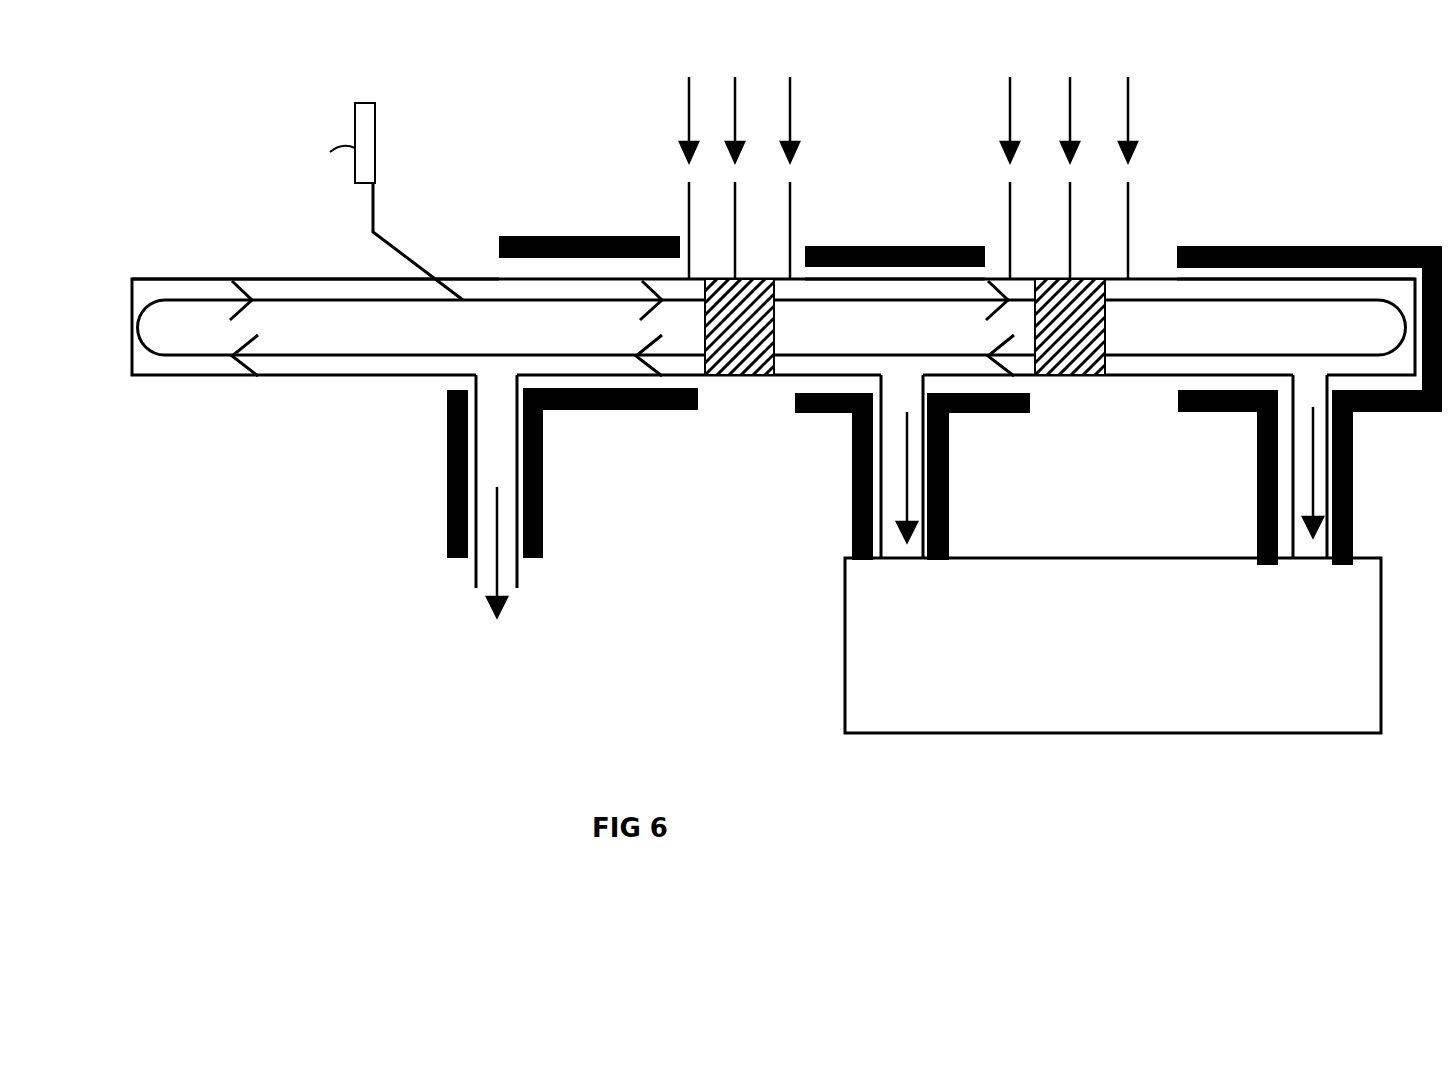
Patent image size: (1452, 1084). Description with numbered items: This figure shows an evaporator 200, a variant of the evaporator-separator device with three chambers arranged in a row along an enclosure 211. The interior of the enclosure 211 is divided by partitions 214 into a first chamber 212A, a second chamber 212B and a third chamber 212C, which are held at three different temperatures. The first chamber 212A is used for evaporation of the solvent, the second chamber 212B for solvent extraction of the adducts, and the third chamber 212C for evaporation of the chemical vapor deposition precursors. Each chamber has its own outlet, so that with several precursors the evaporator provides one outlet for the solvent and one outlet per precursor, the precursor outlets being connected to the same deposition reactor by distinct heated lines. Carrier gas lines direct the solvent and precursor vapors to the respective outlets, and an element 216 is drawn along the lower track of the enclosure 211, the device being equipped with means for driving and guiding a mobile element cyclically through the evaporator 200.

The evaporator 200 is at (264, 555).
The enclosure 211 is at (343, 280).
The first chamber 212A is at (196, 290).
The second chamber 212B is at (868, 292).
The third chamber 212C is at (1233, 290).
The partitions 214 is at (745, 347).
The return conveyor track 216 is at (306, 355).